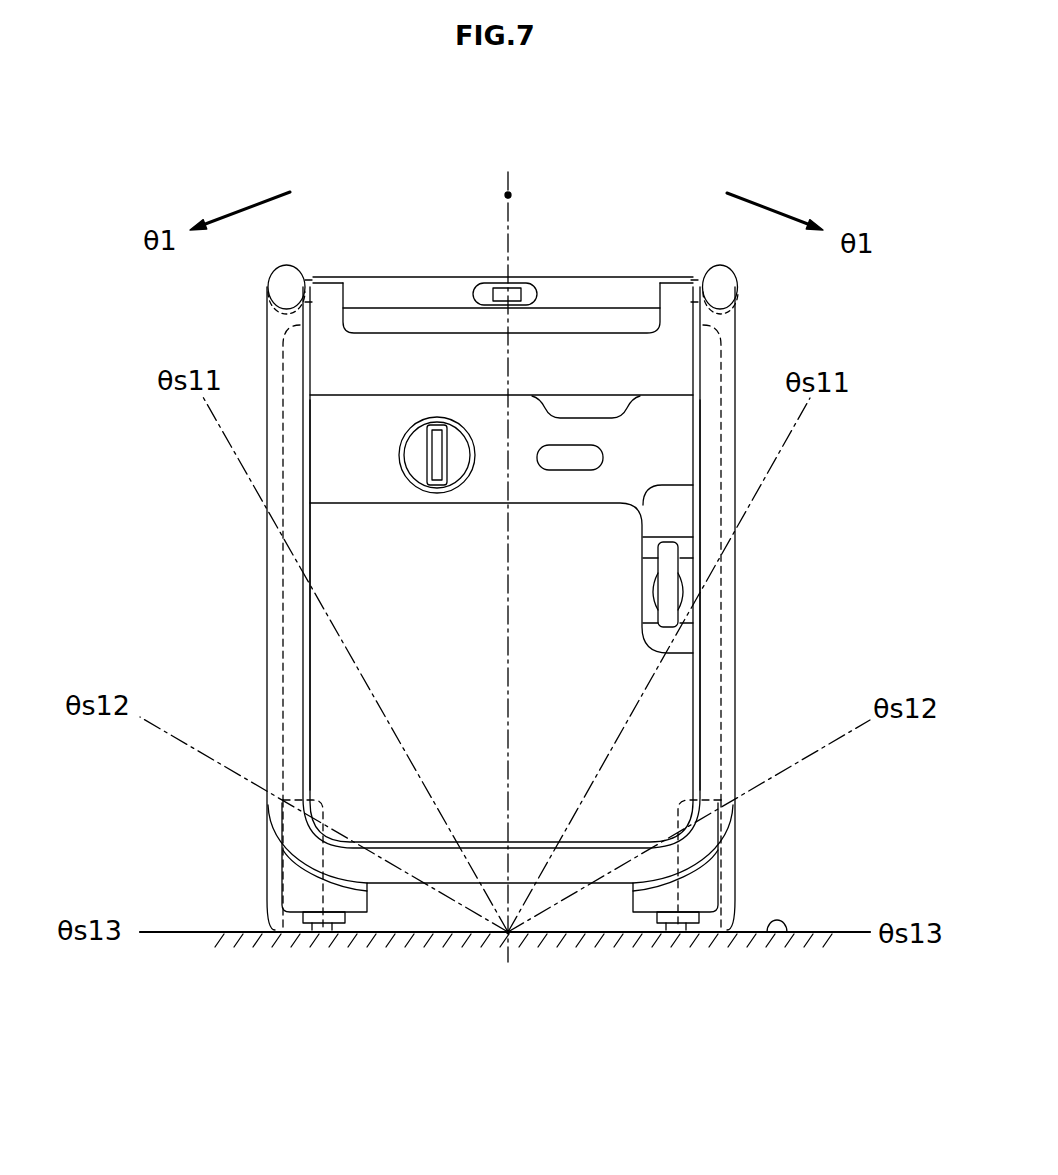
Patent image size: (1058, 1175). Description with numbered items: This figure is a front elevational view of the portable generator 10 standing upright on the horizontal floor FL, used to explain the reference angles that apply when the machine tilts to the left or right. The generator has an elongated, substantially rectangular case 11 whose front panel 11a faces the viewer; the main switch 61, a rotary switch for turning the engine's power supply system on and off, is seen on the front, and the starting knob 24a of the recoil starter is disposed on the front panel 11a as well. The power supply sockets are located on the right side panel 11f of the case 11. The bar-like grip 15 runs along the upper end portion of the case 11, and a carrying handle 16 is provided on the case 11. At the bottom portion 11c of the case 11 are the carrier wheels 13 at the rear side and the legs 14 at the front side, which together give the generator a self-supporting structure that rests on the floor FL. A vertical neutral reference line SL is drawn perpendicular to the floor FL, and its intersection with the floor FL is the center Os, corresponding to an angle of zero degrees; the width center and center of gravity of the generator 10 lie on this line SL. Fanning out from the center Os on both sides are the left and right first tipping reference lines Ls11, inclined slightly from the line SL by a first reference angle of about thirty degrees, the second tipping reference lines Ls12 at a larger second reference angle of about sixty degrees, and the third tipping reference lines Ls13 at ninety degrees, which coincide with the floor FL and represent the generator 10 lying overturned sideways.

The portable generator 10 is at (287, 160).
The case 11 is at (378, 362).
The front panel 11a is at (351, 543).
The bottom portion 11c is at (401, 884).
The right side panel 11f is at (723, 596).
The carrier wheel 13 is at (273, 912).
The leg 14 is at (330, 925).
The grip 15 is at (608, 296).
The carrying handle 16 is at (277, 595).
The starting knob 24a is at (670, 550).
The main switch 61 is at (423, 437).
The neutral reference line SL is at (511, 194).
The center Os is at (509, 936).
The horizontal floor FL is at (785, 940).
The first tipping reference line Ls11 is at (230, 447).
The second tipping reference line Ls12 is at (172, 740).
The third tipping reference line Ls13 is at (168, 928).